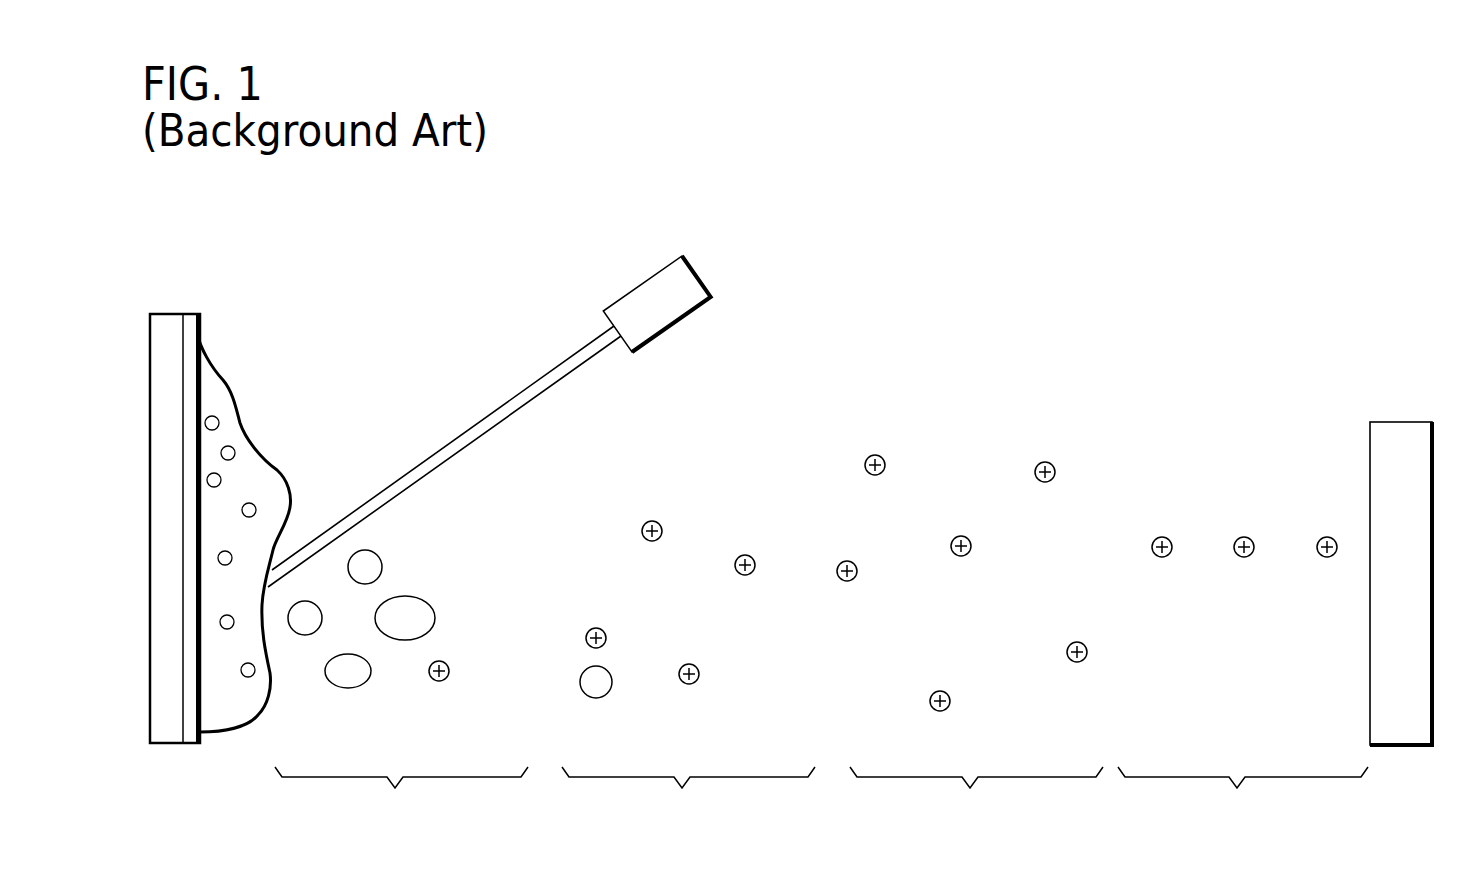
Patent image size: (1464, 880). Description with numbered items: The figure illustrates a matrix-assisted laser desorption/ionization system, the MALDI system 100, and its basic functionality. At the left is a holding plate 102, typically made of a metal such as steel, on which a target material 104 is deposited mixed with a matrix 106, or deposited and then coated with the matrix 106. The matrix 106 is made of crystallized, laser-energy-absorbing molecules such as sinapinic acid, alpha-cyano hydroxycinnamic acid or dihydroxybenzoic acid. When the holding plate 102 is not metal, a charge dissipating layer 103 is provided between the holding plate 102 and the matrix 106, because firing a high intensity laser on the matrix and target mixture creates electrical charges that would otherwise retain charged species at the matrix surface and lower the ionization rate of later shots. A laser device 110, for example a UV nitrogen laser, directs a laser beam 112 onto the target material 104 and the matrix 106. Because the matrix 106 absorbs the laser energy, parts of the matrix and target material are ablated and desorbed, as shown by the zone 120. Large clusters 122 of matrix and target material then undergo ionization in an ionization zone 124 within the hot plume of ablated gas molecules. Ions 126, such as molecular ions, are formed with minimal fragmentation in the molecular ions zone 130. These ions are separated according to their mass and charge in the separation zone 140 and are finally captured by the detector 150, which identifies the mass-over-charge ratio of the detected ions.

The MALDI system 100 is at (383, 228).
The holding plate 102 is at (160, 398).
The charge dissipating layer 103 is at (190, 697).
The target material 104 is at (216, 417).
The matrix 106 is at (260, 482).
The laser device 110 is at (642, 283).
The laser beam 112 is at (442, 443).
The zone 120 is at (401, 683).
The large clusters 122 is at (425, 597).
The ionization zone 124 is at (688, 668).
The ions 126 is at (875, 455).
The molecular ions zone 130 is at (970, 639).
The separation zone 140 is at (1243, 676).
The detector 150 is at (1397, 747).